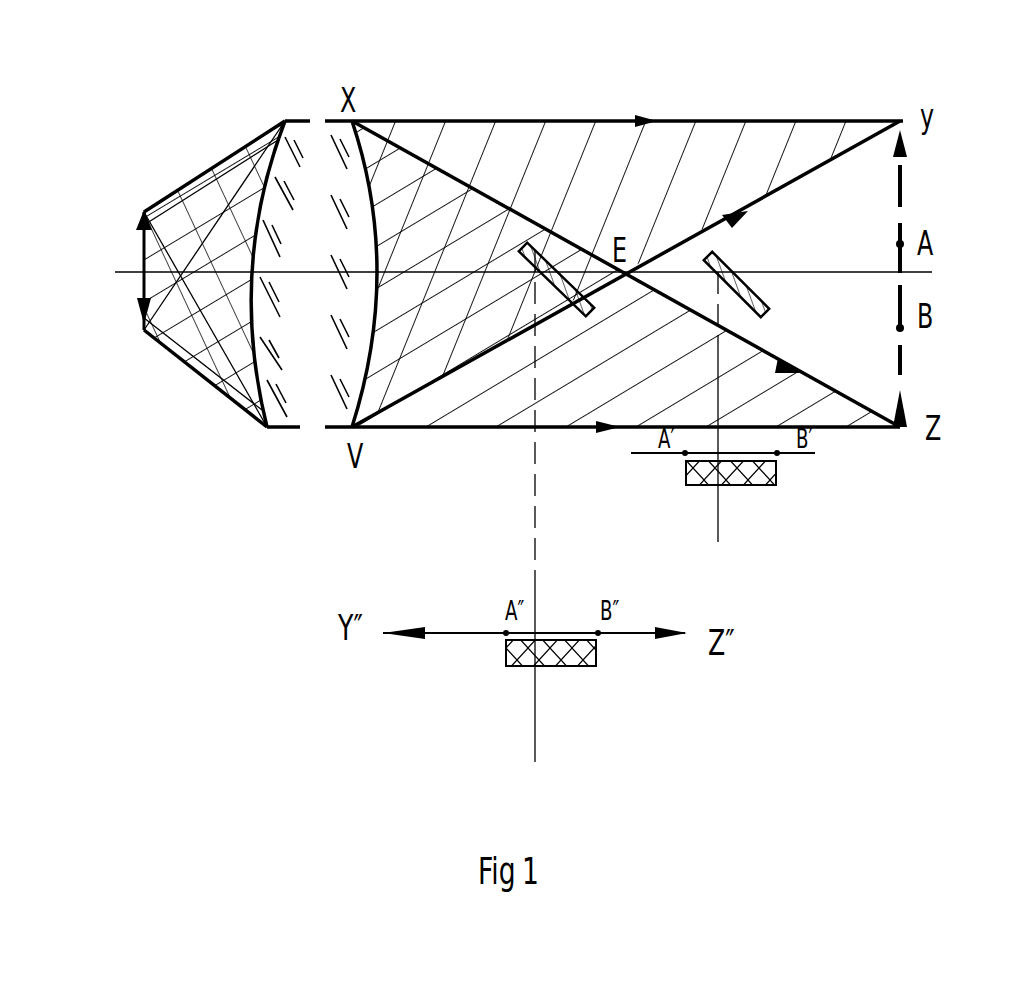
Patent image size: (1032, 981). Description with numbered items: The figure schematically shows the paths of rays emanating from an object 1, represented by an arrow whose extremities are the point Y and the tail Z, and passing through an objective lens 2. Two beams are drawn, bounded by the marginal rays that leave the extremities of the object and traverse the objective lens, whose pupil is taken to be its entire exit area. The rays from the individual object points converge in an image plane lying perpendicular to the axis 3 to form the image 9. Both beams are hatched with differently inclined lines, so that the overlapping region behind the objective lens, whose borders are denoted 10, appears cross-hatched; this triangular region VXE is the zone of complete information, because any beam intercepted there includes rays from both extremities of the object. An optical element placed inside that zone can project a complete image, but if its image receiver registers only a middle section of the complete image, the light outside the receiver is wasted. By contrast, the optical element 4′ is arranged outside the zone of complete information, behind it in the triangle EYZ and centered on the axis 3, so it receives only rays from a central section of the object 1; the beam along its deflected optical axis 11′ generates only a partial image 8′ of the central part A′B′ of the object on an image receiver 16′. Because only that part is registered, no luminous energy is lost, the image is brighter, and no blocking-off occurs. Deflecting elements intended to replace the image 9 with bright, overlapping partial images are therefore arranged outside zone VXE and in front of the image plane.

The object 1 is at (144, 290).
The objective lens 2 is at (283, 140).
The axis 3 is at (196, 262).
The optical element 4′ is at (745, 277).
The partial image 8′ is at (800, 455).
The image 9 is at (903, 197).
The borders of the overlapping region 10 is at (435, 172).
The deflected optical axis 11′ is at (720, 518).
The image receiver 16′ is at (686, 475).